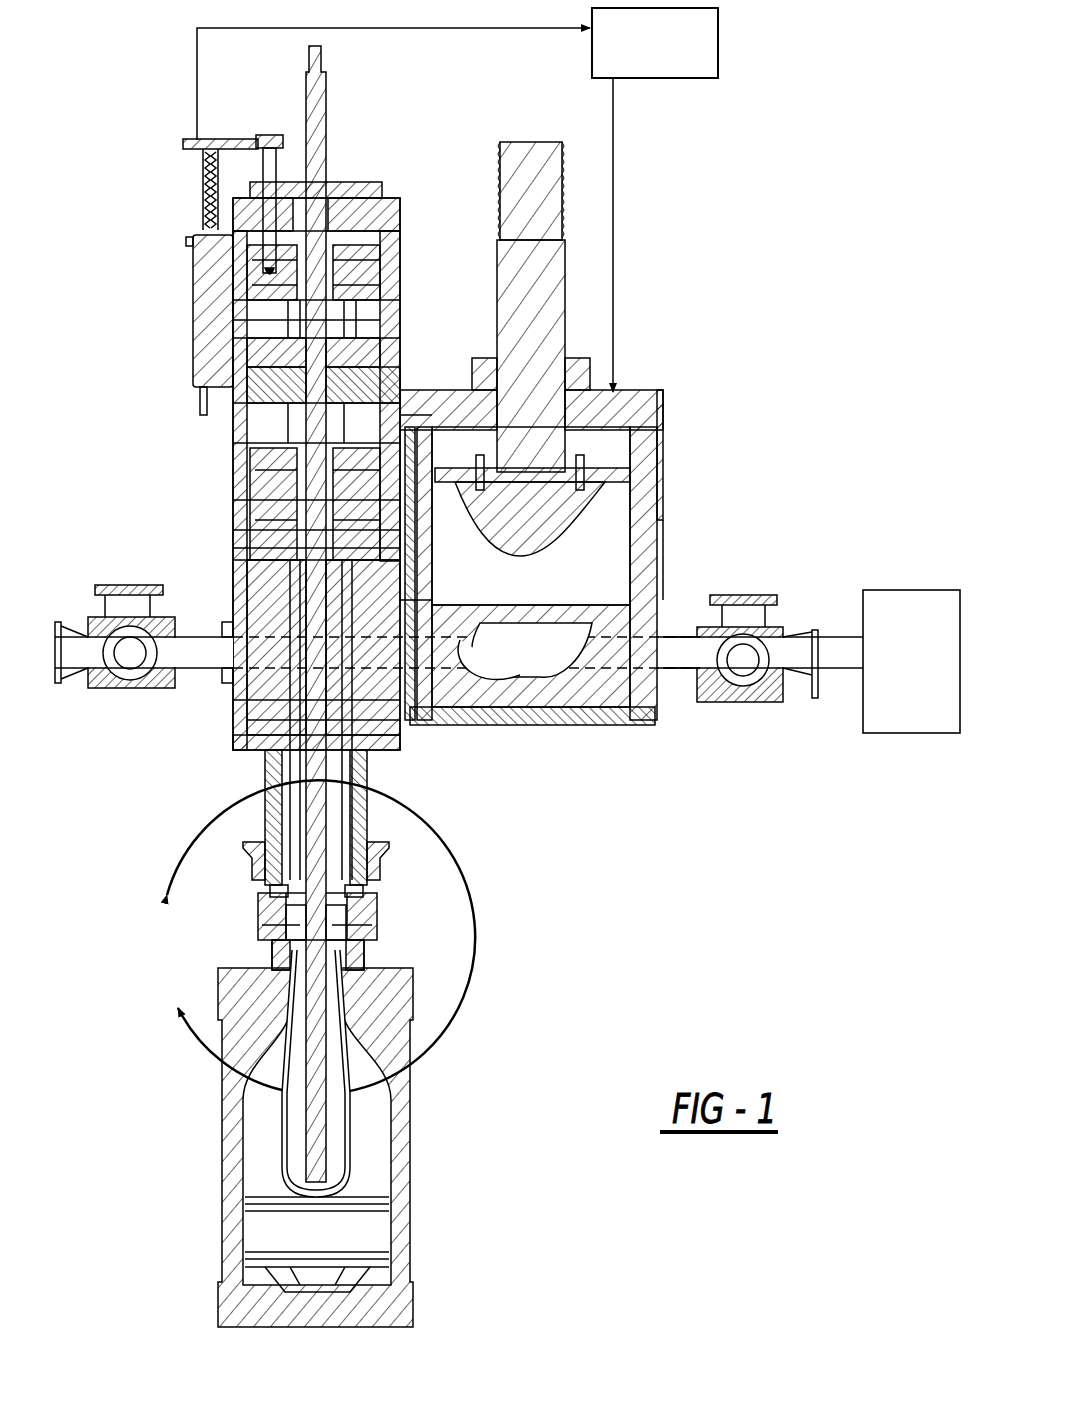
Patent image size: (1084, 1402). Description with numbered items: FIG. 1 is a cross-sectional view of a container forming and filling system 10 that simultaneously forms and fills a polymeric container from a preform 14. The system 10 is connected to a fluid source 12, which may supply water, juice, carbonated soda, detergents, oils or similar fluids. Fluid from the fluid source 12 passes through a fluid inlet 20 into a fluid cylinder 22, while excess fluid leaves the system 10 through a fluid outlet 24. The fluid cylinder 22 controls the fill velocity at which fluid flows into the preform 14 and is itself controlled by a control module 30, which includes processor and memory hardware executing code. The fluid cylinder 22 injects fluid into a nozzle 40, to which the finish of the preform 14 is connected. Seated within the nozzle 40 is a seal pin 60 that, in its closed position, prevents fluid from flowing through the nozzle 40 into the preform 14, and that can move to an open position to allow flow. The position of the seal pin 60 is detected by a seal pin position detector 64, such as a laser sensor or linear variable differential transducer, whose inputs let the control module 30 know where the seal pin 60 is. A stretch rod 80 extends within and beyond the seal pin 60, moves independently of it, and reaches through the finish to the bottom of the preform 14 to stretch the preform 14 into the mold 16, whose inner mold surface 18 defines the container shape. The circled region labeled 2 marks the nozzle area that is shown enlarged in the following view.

The container forming and filling system 10 is at (106, 98).
The fluid source 12 is at (927, 733).
The preform 14 is at (350, 1130).
The mold 16 is at (413, 1190).
The inner mold surface 18 is at (328, 1147).
The fluid inlet 20 is at (820, 632).
The fluid cylinder 22 is at (652, 502).
The fluid outlet 24 is at (55, 652).
The control module 30 is at (718, 42).
The nozzle 40 is at (378, 928).
The seal pin 60 is at (300, 912).
The seal pin position detector 64 is at (193, 305).
The stretch rod 80 is at (312, 1127).
The detail area of FIG. 2 is at (310, 937).